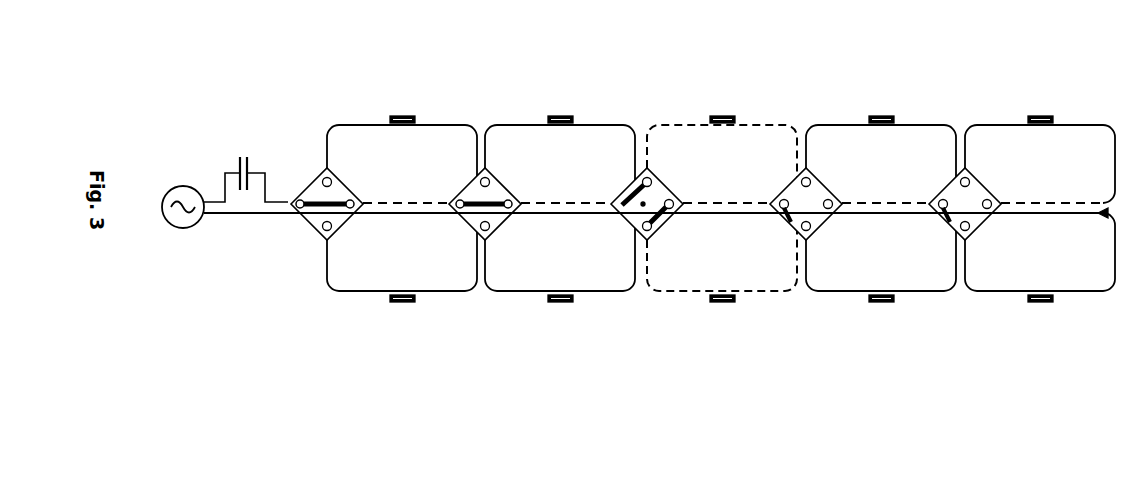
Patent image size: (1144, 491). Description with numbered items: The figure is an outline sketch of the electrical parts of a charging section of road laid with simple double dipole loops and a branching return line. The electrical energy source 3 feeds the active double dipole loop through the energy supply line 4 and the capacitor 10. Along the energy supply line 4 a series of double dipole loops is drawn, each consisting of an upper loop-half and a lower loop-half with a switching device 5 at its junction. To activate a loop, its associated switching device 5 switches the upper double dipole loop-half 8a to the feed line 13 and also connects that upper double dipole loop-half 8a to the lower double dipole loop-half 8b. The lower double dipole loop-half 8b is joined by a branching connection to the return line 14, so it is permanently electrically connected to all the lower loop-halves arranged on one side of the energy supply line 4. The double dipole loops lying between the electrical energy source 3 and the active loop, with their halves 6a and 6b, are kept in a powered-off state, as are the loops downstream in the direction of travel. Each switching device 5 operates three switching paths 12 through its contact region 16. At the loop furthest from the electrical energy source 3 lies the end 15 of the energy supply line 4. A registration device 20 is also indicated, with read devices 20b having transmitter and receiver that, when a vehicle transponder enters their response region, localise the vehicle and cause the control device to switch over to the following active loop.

The electrical energy source 3 is at (183, 185).
The capacitor 10 is at (247, 160).
The energy supply line 4 is at (281, 200).
The switching device 5 is at (338, 190).
The contact region 16 is at (312, 222).
The feed line 13 is at (433, 202).
The switching path 12 is at (494, 197).
The return line 14 is at (592, 203).
The upper double dipole loop-half 8a is at (718, 170).
The lower double dipole loop-half 8b is at (720, 252).
The end of the energy supply line 15 is at (787, 218).
The upper double dipole loop-half 6a is at (880, 170).
The lower double dipole loop-half 6b is at (880, 253).
The registration device 20 is at (1022, 185).
The read device 20b is at (1050, 108).